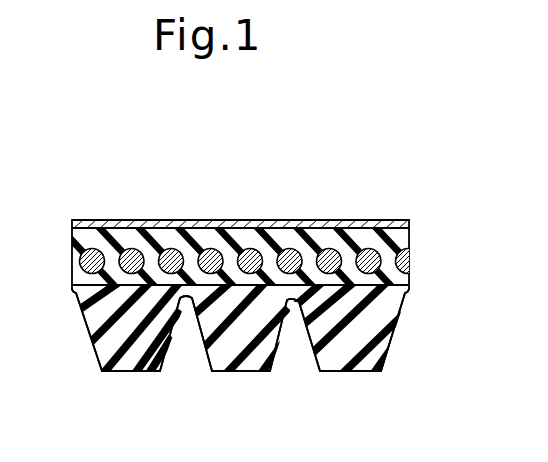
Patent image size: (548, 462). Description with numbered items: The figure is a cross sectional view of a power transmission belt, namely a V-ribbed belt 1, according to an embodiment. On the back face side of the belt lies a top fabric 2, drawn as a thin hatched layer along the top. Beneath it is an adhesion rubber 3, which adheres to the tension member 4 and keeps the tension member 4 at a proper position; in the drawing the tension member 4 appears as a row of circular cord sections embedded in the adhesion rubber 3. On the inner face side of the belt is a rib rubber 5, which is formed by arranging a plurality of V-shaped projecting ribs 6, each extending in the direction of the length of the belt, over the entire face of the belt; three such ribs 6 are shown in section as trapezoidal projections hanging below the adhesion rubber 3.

The V-ribbed belt 1 is at (251, 153).
The top fabric 2 is at (298, 221).
The adhesion rubber 3 is at (409, 239).
The tension member 4 is at (131, 248).
The rib rubber 5 is at (407, 306).
The V-shaped projecting ribs 6 is at (127, 371).